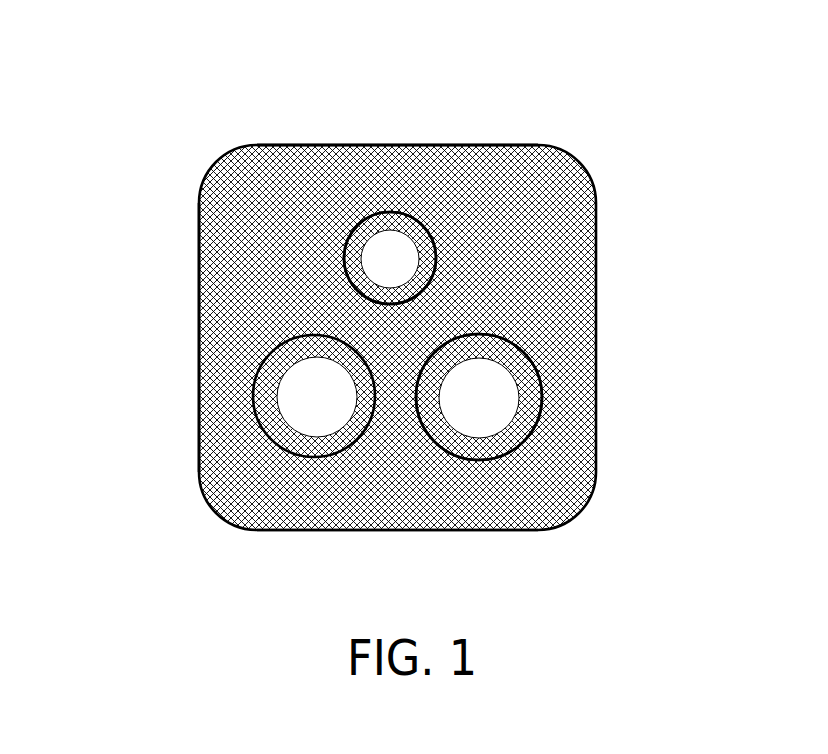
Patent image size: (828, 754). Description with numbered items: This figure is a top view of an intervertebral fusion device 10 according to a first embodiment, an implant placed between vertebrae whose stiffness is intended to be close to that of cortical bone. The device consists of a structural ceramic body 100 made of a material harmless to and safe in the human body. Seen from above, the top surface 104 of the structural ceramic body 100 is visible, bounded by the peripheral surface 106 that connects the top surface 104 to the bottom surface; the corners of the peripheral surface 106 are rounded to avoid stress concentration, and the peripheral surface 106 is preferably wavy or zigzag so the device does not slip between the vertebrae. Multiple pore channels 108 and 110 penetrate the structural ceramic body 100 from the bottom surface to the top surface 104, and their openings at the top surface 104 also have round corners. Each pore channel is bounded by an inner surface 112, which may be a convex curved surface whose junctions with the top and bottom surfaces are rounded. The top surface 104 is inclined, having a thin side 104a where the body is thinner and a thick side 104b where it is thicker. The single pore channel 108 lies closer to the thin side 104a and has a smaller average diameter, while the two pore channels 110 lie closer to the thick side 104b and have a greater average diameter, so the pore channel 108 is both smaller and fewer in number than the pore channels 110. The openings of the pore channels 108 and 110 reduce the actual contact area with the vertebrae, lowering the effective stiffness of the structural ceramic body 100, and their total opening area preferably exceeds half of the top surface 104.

The intervertebral fusion device 10 is at (150, 52).
The structural ceramic body 100 is at (582, 266).
The top surface 104 is at (519, 183).
The thin side 104a is at (308, 145).
The thick side 104b is at (402, 530).
The peripheral surface 106 is at (199, 332).
The pore channel 108 is at (385, 248).
The pore channel 110 is at (303, 399).
The inner surface 112 is at (413, 217).